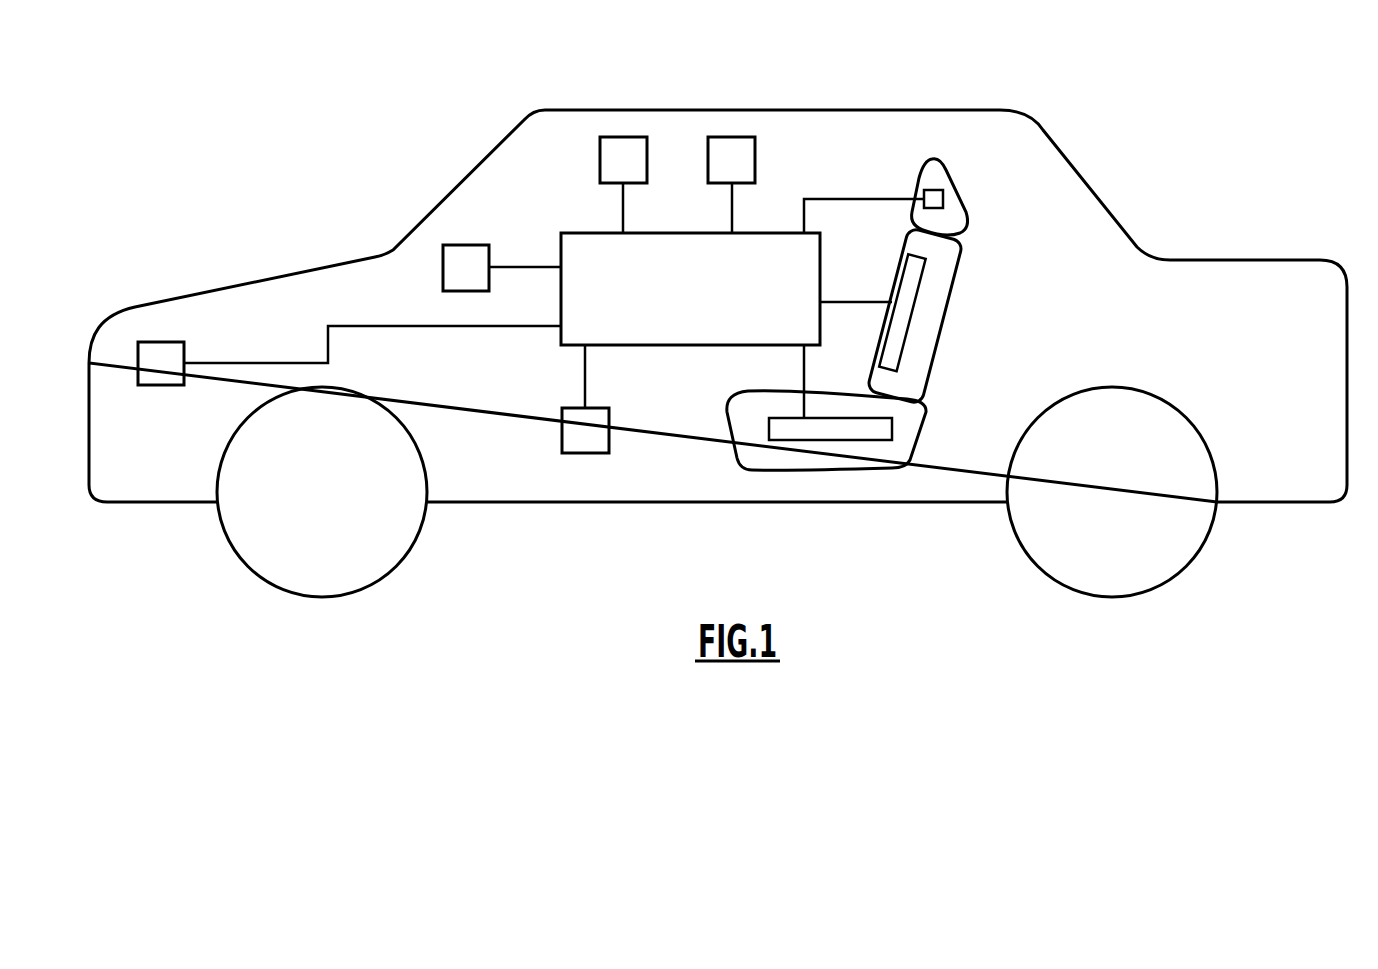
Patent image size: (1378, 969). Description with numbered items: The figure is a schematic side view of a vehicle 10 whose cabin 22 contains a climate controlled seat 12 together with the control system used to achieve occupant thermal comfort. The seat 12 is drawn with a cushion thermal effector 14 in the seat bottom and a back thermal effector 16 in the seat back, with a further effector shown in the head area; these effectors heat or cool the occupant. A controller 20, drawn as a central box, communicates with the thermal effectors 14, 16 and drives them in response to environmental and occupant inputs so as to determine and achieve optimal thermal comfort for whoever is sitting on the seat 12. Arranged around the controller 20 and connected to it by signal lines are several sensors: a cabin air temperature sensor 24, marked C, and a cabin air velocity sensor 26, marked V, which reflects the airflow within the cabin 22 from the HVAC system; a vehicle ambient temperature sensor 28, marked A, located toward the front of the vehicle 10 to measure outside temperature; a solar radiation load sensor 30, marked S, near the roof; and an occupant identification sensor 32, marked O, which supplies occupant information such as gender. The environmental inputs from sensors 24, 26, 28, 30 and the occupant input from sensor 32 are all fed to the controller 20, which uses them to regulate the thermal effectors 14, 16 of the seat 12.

The vehicle 10 is at (1022, 95).
The climate controlled seat 12 is at (889, 305).
The cushion thermal effector 14 is at (775, 428).
The back thermal effector 16 is at (936, 200).
The controller 20 is at (697, 345).
The cabin 22 is at (870, 173).
The cabin air temperature sensor 24 is at (472, 245).
The cabin air velocity sensor 26 is at (562, 430).
The vehicle ambient temperature sensor 28 is at (168, 385).
The solar radiation load sensor 30 is at (600, 164).
The occupant identification sensor 32 is at (721, 183).